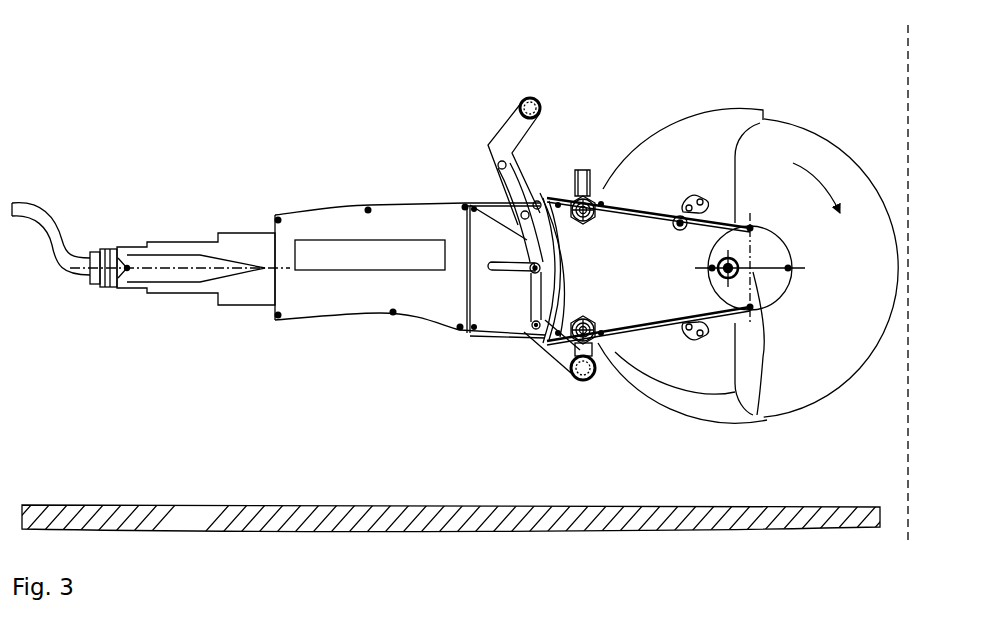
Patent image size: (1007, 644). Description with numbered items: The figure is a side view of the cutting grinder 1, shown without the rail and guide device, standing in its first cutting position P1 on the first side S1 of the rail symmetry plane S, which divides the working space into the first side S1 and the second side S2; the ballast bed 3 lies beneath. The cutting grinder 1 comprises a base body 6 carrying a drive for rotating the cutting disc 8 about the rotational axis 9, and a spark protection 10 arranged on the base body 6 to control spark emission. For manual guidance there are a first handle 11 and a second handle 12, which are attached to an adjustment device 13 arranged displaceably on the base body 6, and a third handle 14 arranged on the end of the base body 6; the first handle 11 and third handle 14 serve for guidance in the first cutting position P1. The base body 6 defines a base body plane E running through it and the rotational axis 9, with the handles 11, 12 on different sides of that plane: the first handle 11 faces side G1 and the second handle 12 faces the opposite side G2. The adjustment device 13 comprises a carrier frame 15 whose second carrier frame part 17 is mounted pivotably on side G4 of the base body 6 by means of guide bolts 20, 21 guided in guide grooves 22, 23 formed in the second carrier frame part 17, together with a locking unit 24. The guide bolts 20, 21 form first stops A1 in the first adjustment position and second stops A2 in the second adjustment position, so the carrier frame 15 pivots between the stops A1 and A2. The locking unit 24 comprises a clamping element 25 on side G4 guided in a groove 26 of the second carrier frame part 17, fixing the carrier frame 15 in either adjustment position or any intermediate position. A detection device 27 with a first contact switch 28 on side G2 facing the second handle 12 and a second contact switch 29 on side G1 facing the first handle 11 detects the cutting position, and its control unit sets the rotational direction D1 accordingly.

The cutting grinder 1 is at (395, 84).
The ballast bed 3 is at (197, 528).
The base body 6 is at (320, 201).
The cutting disc 8 is at (818, 152).
The rotational axis 9 is at (763, 332).
The spark protection 10 is at (693, 403).
The first handle 11 is at (530, 98).
The second handle 12 is at (583, 381).
The adjustment device 13 is at (553, 372).
The third handle 14 is at (180, 243).
The carrier frame 15 is at (495, 127).
The second carrier frame part 17 is at (512, 128).
The guide bolt 20 is at (542, 180).
The guide bolt 21 is at (540, 300).
The guide groove 22 is at (505, 172).
The guide groove 23 is at (532, 300).
The locking unit 24 is at (515, 278).
The clamping element 25 is at (488, 268).
The groove 26 is at (470, 205).
The detection device 27 is at (620, 185).
The first contact switch 28 is at (580, 352).
The second contact switch 29 is at (598, 183).
The base body plane E is at (140, 264).
The first stops A1 is at (527, 238).
The second stops A2 is at (497, 160).
The side of the base body G1 is at (565, 182).
The side of the base body G2 is at (597, 350).
The side of the base body G4 is at (646, 271).
The first cutting position P1 is at (690, 248).
The rotational direction D1 is at (816, 188).
The rail symmetry plane S is at (905, 37).
The first side S1 is at (793, 41).
The second side S2 is at (923, 43).